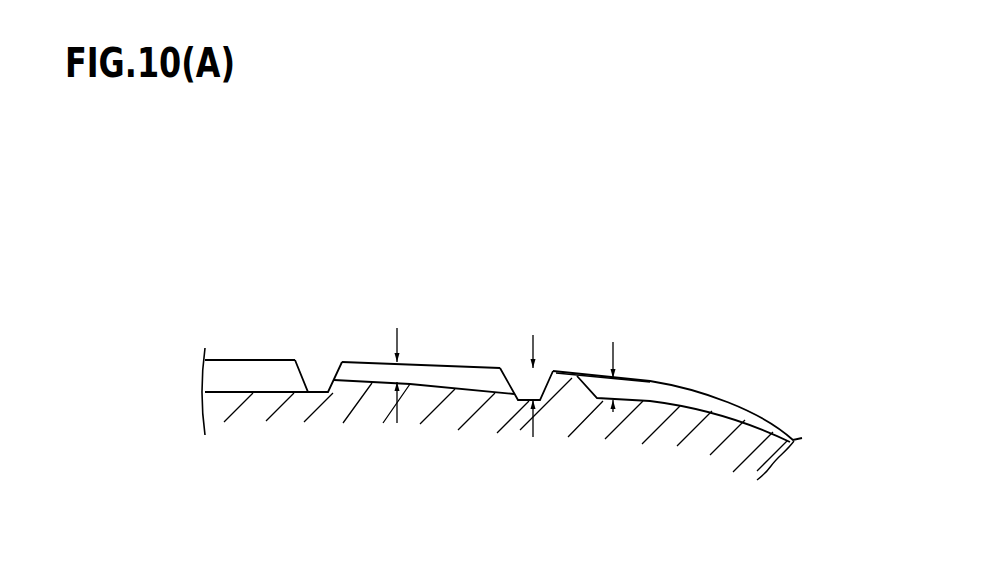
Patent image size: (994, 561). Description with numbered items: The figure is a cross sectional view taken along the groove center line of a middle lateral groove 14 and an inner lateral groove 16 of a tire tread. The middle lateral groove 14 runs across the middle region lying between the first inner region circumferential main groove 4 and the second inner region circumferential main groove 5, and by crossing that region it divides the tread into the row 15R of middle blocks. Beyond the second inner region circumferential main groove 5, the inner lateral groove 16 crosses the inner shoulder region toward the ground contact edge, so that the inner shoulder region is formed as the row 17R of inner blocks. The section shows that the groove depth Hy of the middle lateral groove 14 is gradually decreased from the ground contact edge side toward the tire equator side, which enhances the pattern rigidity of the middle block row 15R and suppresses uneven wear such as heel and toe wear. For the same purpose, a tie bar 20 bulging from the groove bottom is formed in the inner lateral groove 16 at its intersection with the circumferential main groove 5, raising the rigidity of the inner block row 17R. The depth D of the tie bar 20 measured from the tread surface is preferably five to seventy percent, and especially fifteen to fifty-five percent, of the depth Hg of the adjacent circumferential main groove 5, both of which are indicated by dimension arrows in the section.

The first inner region circumferential main groove 4 is at (318, 358).
The second inner region circumferential main groove 5 is at (518, 353).
The middle lateral groove 14 is at (418, 386).
The row of middle blocks 15R is at (418, 363).
The inner lateral groove 16 is at (653, 404).
The row of inner blocks 17R is at (685, 380).
The tie bar 20 is at (562, 383).
The groove depth of the middle lateral grooves Hy is at (387, 363).
The depth of the adjacent circumferential main groove Hg is at (523, 401).
The depth of the tie bar D is at (626, 377).